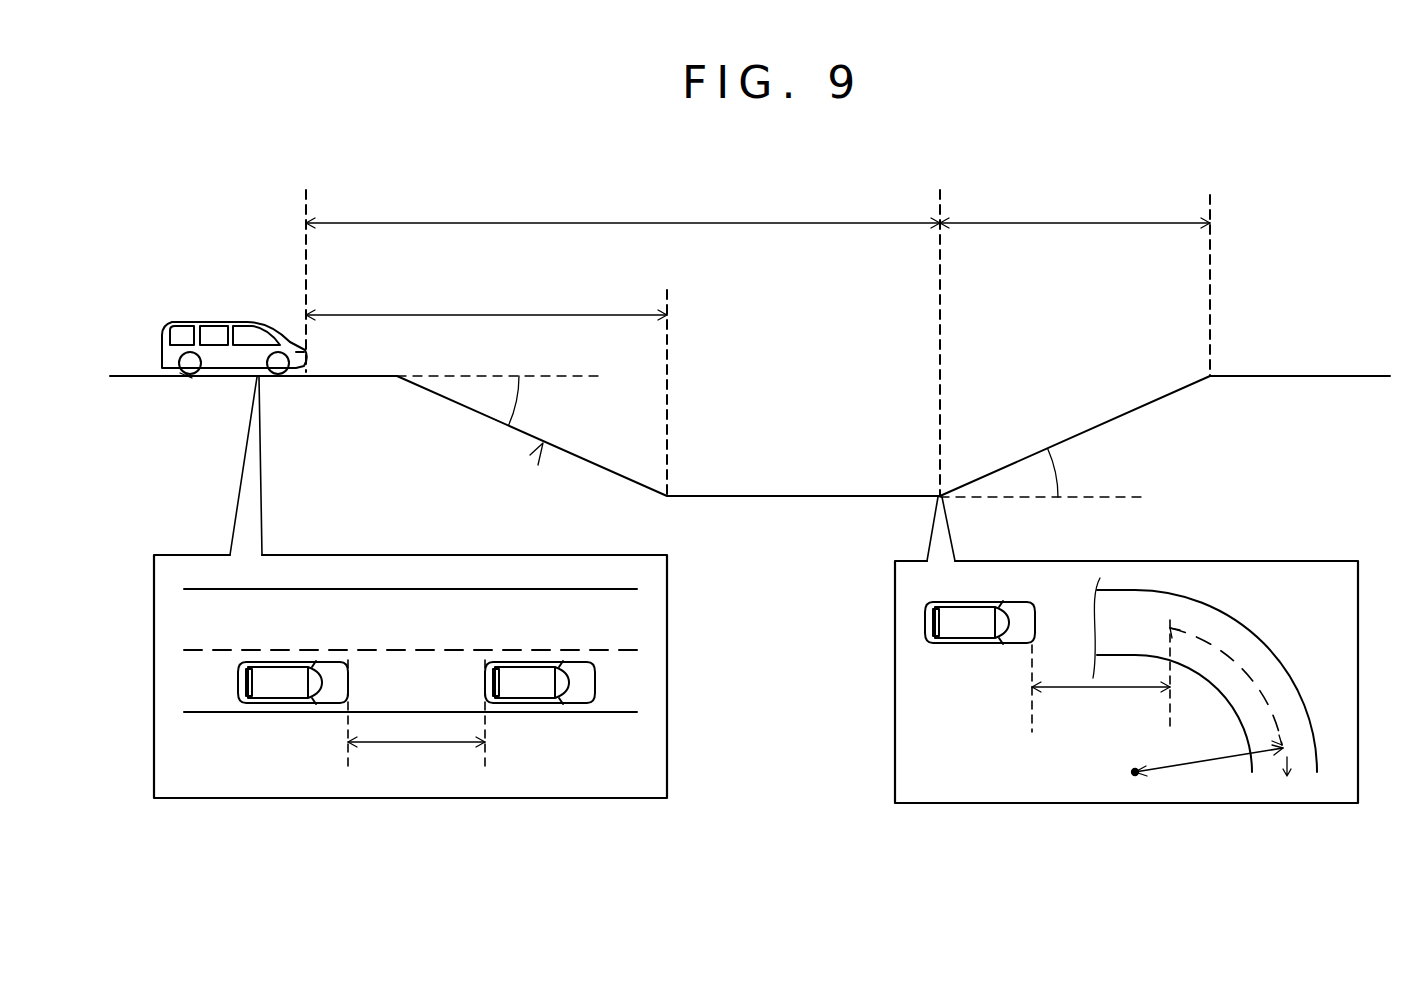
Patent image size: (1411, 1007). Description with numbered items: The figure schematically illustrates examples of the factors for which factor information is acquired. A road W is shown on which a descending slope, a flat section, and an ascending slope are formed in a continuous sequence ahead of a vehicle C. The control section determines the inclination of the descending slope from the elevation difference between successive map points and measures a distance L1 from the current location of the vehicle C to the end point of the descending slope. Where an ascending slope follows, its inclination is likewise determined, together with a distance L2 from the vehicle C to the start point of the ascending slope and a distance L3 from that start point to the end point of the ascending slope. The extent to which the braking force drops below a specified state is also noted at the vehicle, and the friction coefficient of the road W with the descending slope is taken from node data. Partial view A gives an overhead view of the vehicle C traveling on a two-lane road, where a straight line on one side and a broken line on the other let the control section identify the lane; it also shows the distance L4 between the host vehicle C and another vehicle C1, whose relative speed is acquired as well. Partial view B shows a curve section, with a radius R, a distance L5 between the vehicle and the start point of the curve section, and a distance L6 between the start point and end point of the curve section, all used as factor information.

The vehicle C is at (176, 322).
The other vehicle C1 is at (587, 693).
The road W is at (1312, 358).
The distance to end point of descending slope L1 is at (486, 300).
The distance to start point of ascending slope L2 is at (623, 208).
The distance from start point to end point of ascending slope L3 is at (1075, 208).
The distance between host vehicle and other vehicle L4 is at (416, 721).
The distance to start point of curve section L5 is at (1101, 676).
The distance from start point to end point of curve section L6 is at (1230, 702).
The radius of curve section R is at (1208, 761).
The partial view A is at (272, 820).
The partial view B is at (1024, 822).